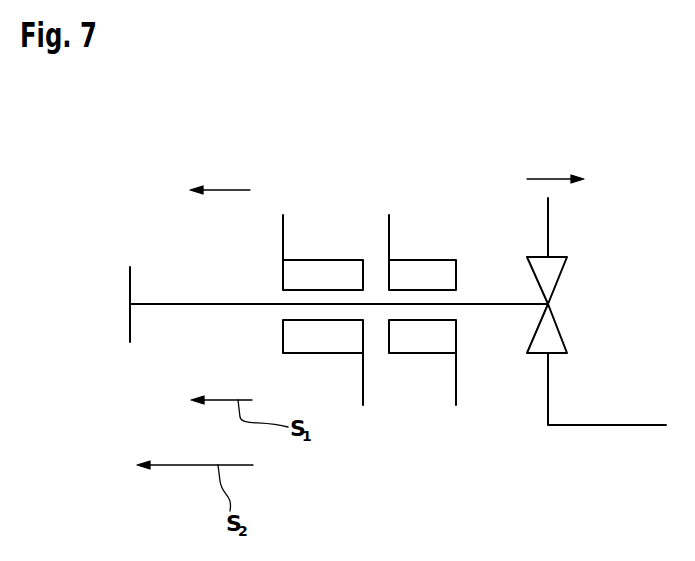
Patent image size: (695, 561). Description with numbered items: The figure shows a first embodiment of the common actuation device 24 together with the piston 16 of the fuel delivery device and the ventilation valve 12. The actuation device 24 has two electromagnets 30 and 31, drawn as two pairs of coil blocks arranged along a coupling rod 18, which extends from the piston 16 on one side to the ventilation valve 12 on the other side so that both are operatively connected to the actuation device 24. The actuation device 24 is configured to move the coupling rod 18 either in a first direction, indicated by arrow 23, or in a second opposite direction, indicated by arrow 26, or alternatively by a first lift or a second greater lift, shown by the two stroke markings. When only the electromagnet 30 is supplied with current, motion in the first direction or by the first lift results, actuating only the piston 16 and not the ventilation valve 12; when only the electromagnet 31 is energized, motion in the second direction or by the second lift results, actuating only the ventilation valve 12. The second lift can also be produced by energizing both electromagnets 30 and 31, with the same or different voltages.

The ventilation valve 12 is at (553, 271).
The piston 16 is at (128, 283).
The coupling rod 18 is at (493, 306).
The arrow 23 is at (233, 190).
The common actuation device 24 is at (376, 245).
The arrow 26 is at (550, 178).
The electromagnet 30 is at (325, 228).
The electromagnet 31 is at (452, 228).